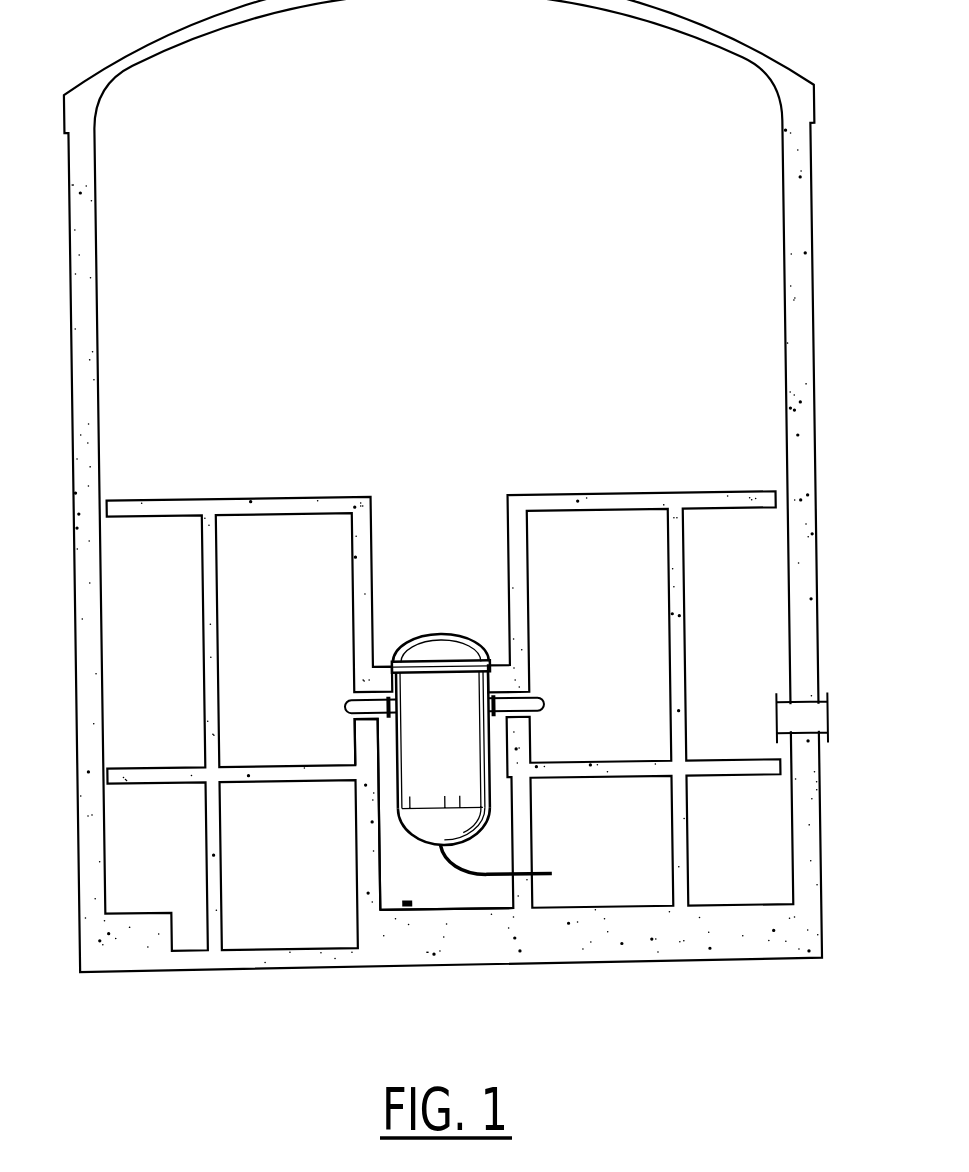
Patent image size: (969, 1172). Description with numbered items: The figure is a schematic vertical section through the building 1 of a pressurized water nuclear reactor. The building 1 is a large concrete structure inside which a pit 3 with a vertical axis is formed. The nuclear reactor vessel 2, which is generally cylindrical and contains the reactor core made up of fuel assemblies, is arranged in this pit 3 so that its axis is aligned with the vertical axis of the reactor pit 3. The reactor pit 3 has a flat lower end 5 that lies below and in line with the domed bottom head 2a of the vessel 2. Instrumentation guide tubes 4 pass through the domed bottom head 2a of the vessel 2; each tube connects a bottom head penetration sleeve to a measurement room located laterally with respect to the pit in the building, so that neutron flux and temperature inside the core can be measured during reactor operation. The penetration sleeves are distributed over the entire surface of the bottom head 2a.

The building 1 is at (819, 327).
The nuclear reactor vessel 2 is at (417, 747).
The domed bottom head 2a is at (490, 829).
The pit 3 is at (380, 848).
The instrumentation guide tubes 4 is at (483, 884).
The flat lower end 5 is at (417, 910).